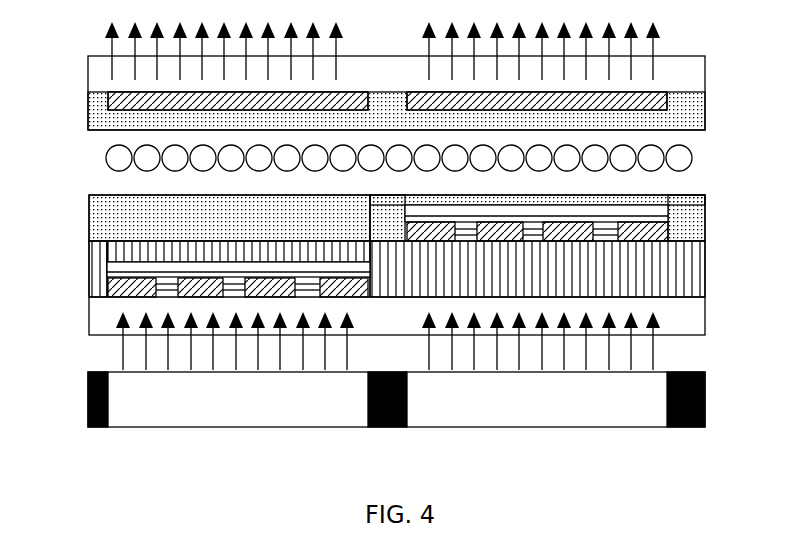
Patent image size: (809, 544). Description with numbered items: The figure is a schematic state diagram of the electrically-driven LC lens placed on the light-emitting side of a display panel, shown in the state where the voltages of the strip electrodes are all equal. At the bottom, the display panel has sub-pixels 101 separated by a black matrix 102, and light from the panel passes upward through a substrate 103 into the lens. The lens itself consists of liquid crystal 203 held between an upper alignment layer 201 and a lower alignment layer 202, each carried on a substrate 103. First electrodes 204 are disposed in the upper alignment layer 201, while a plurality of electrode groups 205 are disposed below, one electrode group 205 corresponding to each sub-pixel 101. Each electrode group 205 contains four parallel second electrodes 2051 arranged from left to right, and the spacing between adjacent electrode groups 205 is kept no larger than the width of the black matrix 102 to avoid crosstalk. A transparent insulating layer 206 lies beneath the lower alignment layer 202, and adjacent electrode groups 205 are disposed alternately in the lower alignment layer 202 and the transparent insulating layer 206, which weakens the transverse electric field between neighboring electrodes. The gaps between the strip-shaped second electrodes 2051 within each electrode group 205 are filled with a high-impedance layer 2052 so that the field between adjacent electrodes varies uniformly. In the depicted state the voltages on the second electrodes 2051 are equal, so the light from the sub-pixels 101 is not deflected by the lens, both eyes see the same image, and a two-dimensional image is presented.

The sub-pixel 101 is at (396, 420).
The black matrix 102 is at (440, 407).
The substrate 103 is at (440, 195).
The upper alignment layer 201 is at (425, 93).
The lower alignment layer 202 is at (424, 253).
The liquid crystal 203 is at (434, 141).
The first electrode 204 is at (346, 79).
The electrode group 205 is at (396, 242).
The second electrode 2051 is at (330, 297).
The high-impedance layer 2052 is at (405, 212).
The transparent insulating layer 206 is at (55, 261).